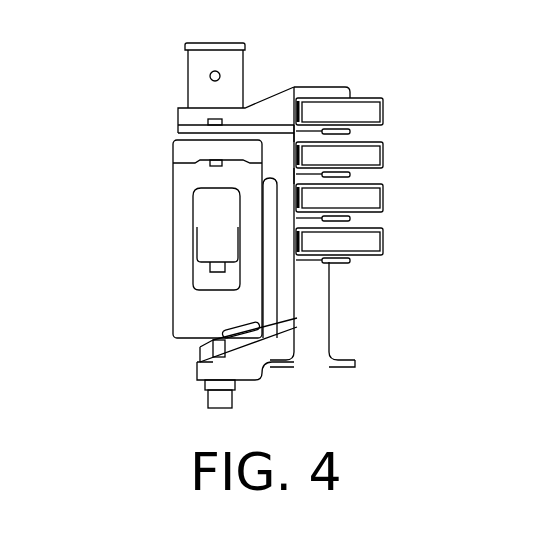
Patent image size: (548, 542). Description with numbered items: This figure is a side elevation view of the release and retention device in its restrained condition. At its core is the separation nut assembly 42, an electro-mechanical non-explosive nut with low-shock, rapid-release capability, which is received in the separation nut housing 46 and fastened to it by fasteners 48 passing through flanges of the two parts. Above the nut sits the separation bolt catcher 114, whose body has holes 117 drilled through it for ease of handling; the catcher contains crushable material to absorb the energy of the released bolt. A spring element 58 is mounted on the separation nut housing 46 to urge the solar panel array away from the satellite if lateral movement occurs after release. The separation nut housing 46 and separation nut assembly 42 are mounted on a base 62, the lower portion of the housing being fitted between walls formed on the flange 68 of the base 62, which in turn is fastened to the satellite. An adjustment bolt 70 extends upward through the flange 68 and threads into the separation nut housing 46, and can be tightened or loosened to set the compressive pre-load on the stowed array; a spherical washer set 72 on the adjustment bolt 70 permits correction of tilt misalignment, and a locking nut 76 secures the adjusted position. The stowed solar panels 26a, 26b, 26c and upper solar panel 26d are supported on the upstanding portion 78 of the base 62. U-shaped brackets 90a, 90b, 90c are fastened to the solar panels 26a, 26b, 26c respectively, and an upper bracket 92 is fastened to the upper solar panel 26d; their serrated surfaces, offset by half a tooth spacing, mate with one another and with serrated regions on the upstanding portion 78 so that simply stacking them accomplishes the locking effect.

The separation bolt catcher 114 is at (225, 43).
The holes 117 is at (203, 75).
The fasteners 48 is at (178, 124).
The separation nut assembly 42 is at (205, 208).
The separation nut housing 46 is at (173, 237).
The spring element 58 is at (262, 298).
The adjustment bolt 70 is at (213, 350).
The locking nut 76 is at (220, 358).
The spherical washer set 72 is at (217, 388).
The upper bracket 92 is at (318, 88).
The upper solar panel 26d is at (368, 103).
The solar panel 26c is at (368, 157).
The solar panel 26b is at (372, 202).
The solar panel 26a is at (375, 245).
The U-shaped bracket 90c is at (352, 136).
The U-shaped bracket 90b is at (352, 178).
The U-shaped bracket 90a is at (345, 262).
The upstanding portion 78 is at (328, 318).
The flange 68 is at (353, 367).
The base 62 is at (302, 370).